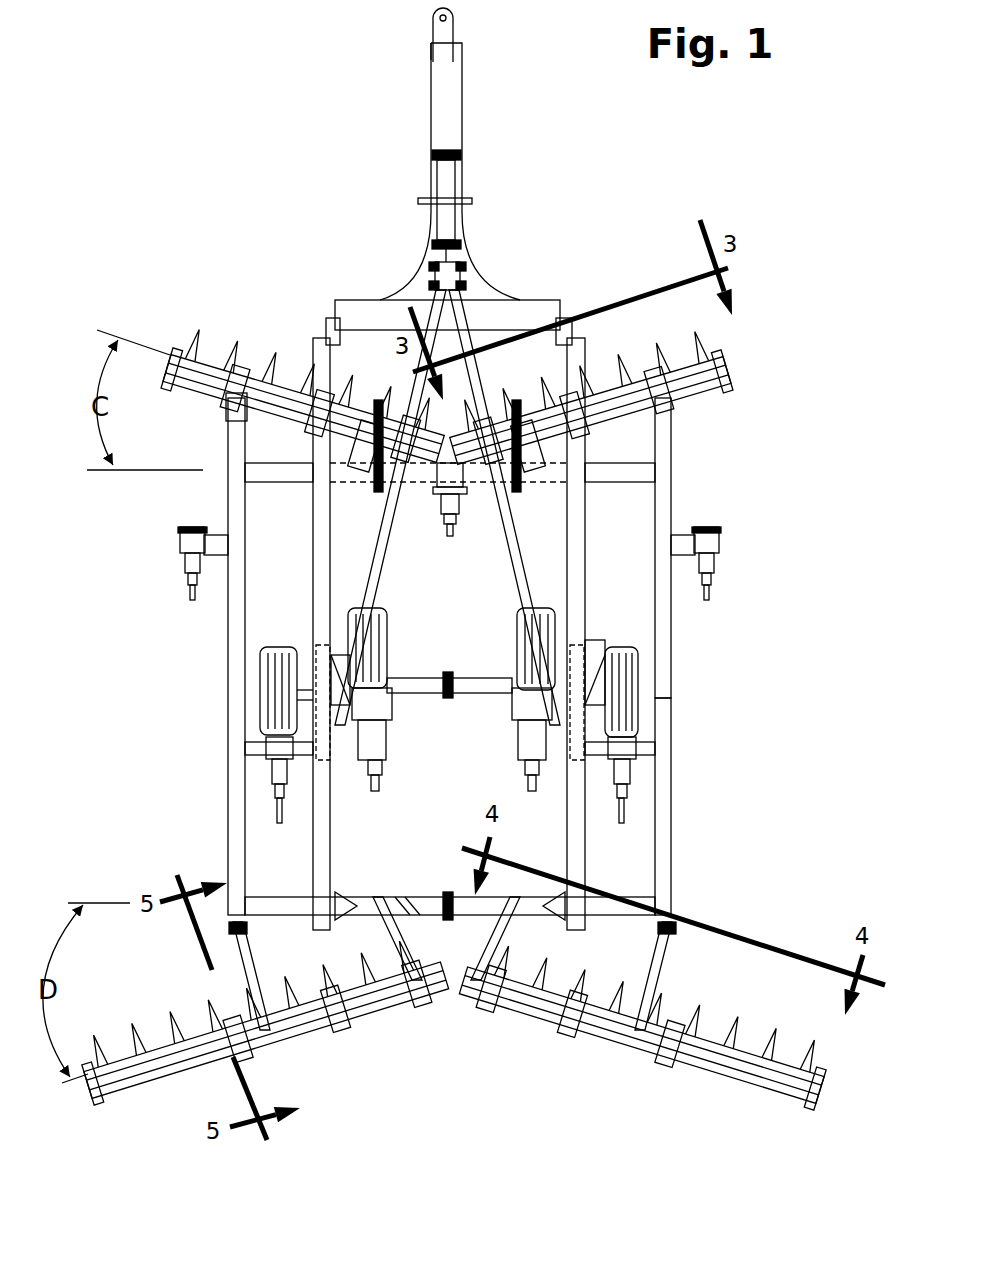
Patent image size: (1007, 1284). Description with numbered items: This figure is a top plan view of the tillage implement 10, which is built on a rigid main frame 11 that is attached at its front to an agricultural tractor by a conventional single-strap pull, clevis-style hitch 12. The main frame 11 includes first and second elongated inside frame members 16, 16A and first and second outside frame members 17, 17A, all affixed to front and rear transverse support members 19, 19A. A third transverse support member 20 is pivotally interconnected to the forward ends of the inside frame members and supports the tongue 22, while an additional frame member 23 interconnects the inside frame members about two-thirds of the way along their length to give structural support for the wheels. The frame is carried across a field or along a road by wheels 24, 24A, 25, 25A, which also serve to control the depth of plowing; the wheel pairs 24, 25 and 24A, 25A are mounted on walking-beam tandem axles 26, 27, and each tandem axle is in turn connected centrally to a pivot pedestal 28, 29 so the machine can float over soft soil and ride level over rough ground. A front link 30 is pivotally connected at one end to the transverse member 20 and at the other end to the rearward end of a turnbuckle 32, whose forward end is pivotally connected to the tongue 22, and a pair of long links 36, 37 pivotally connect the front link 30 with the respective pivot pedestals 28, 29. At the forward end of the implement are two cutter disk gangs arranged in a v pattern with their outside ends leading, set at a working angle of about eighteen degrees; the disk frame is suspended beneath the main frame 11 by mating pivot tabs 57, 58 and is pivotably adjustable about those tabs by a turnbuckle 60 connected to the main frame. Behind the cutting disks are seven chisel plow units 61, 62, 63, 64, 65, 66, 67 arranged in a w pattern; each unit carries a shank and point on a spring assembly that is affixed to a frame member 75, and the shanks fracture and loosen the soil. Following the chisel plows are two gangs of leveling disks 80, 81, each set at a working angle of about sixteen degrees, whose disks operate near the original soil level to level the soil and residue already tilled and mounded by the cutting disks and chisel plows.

The tillage implement 10 is at (297, 196).
The main frame 11 is at (673, 705).
The hitch 12 is at (445, 33).
The first inside frame member 16 is at (320, 510).
The second inside frame member 16A is at (588, 524).
The first outside frame member 17 is at (228, 633).
The second outside frame member 17A is at (672, 495).
The front transverse support member 19 is at (635, 468).
The rear transverse support member 19A is at (280, 900).
The third transverse support member 20 is at (540, 312).
The tongue 22 is at (445, 118).
The additional frame member 23 is at (462, 685).
The wheel 24 is at (278, 646).
The wheel 24A is at (640, 668).
The wheel 25 is at (385, 632).
The wheel 25A is at (515, 633).
The tandem axle 26 is at (348, 608).
The tandem axle 27 is at (598, 640).
The left wheel hub bracket 28 is at (348, 765).
The right wheel hub bracket 29 is at (556, 766).
The front link 30 is at (452, 310).
The turnbuckle 32 is at (452, 190).
The long link 36 is at (385, 553).
The long link 37 is at (512, 541).
The pivot tab 57 is at (230, 417).
The pivot tab 58 is at (384, 480).
The turnbuckle 60 is at (360, 465).
The chisel plow unit 61 is at (166, 566).
The chisel plow unit 62 is at (265, 790).
The chisel plow unit 63 is at (390, 755).
The chisel plow unit 64 is at (448, 542).
The chisel plow unit 65 is at (524, 755).
The chisel plow unit 66 is at (640, 810).
The chisel plow unit 67 is at (725, 590).
The frame member 75 is at (218, 540).
The leveling disk gang 80 is at (316, 1050).
The leveling disk gang 81 is at (632, 1072).